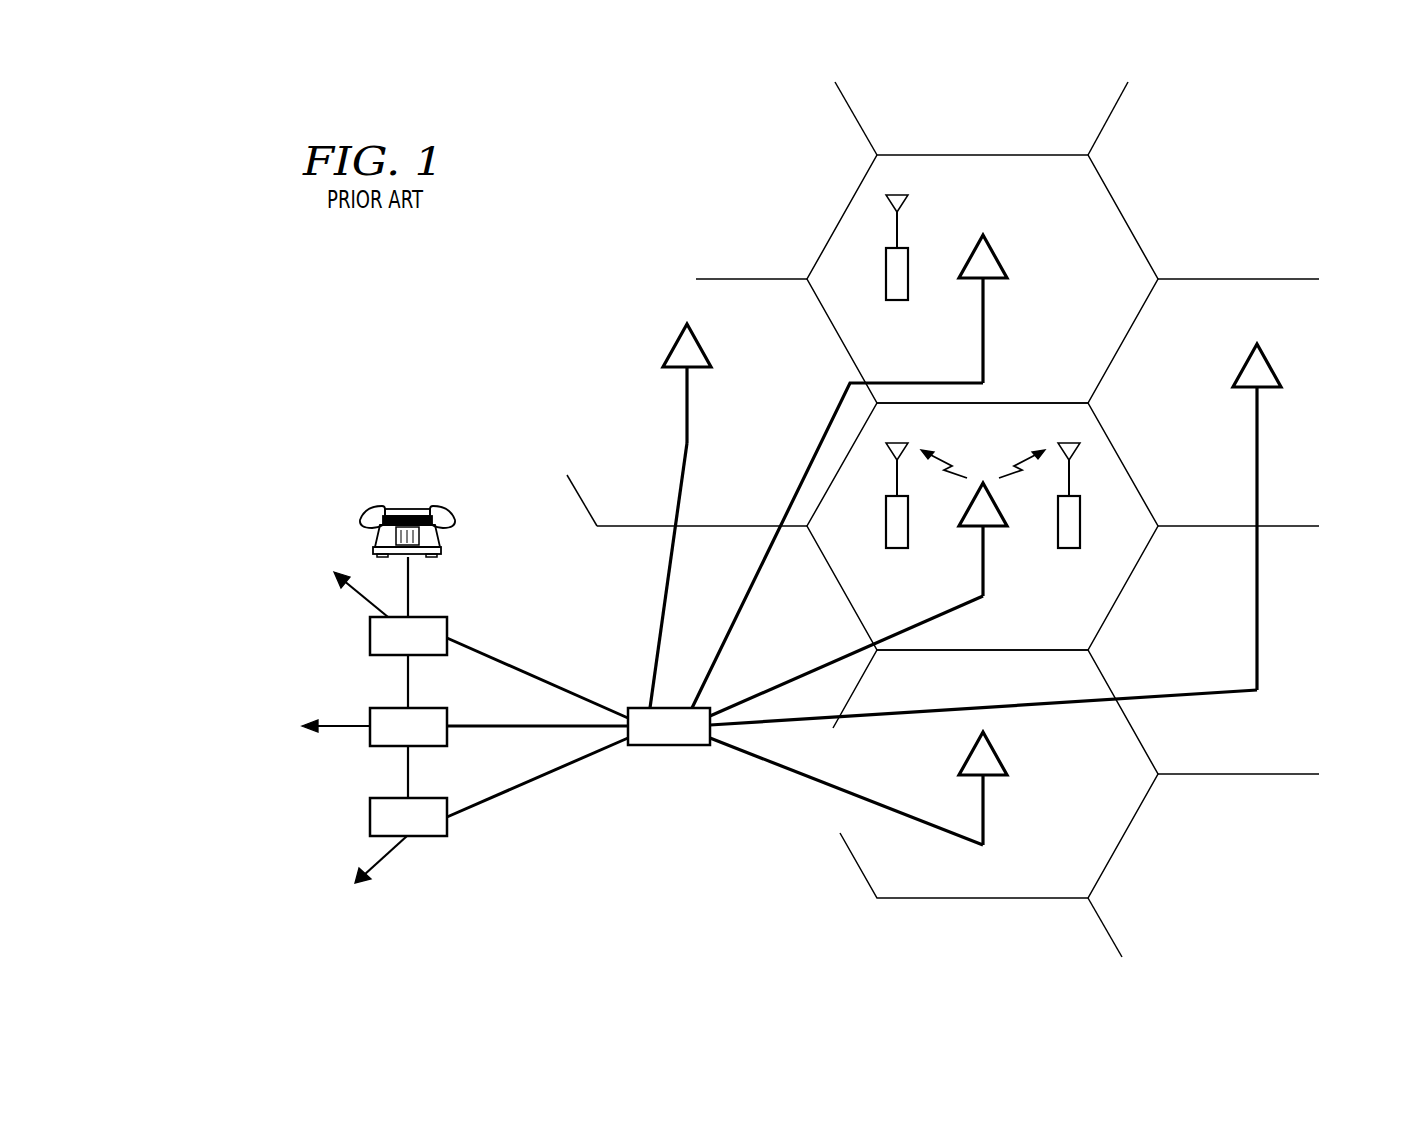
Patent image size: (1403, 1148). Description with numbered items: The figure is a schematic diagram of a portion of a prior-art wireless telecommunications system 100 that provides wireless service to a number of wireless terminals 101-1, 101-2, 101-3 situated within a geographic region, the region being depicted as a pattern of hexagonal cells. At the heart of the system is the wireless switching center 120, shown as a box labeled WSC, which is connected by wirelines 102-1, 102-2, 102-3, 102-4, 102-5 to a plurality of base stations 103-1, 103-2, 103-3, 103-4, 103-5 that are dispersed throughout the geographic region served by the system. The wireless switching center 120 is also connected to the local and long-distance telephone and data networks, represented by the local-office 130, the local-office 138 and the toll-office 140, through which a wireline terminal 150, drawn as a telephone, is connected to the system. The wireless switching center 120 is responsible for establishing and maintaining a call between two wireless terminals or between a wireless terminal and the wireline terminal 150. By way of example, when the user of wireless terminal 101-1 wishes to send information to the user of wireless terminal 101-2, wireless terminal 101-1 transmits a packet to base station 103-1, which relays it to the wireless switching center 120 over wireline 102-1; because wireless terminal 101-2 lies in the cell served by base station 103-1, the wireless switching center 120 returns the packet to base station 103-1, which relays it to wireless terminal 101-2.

The wireless telecommunications system 100 is at (395, 268).
The wireless terminal 101-1 is at (897, 548).
The wireless terminal 101-2 is at (1069, 548).
The wireless terminal 101-3 is at (897, 302).
The wireline 102-1 is at (798, 675).
The wireline 102-2 is at (757, 580).
The wireline 102-3 is at (657, 648).
The wireline 102-4 is at (797, 720).
The wireline 102-5 is at (778, 765).
The base station 103-1 is at (983, 575).
The base station 103-2 is at (983, 315).
The base station 103-3 is at (687, 408).
The base station 103-4 is at (1257, 440).
The base station 103-5 is at (984, 822).
The wireless switching center 120 is at (669, 745).
The local-office 130 is at (370, 628).
The local-office 138 is at (370, 815).
The toll-office 140 is at (370, 710).
The wireline terminal 150 is at (410, 503).